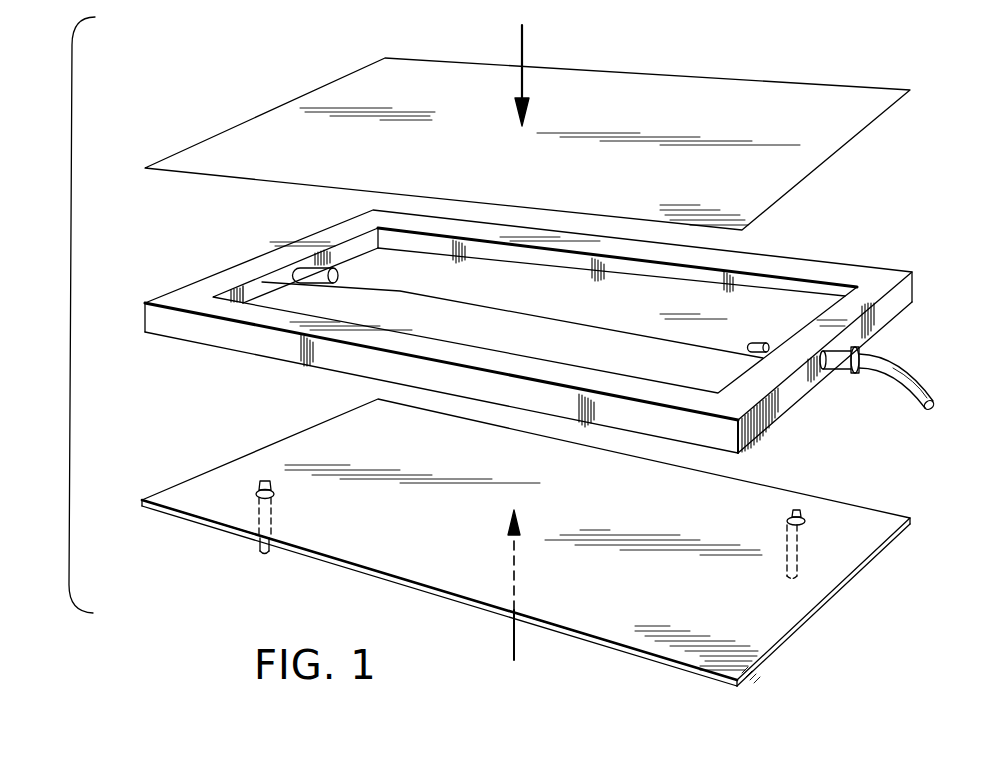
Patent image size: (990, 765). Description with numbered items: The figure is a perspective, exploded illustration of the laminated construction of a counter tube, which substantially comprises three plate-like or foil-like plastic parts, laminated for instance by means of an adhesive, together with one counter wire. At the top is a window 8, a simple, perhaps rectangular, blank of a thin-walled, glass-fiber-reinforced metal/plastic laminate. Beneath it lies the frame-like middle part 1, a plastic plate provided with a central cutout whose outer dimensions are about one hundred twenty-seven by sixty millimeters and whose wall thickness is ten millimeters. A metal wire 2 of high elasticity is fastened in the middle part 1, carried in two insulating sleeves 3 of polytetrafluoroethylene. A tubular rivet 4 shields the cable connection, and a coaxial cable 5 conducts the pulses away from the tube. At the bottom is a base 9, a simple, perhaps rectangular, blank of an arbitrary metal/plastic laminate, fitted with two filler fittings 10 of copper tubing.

The frame-like middle part 1 is at (243, 288).
The metal wire 2 is at (510, 307).
The insulating sleeves 3 is at (320, 282).
The tubular rivet 4 is at (850, 373).
The coaxial cable 5 is at (902, 360).
The window 8 is at (233, 127).
The base 9 is at (180, 484).
The filler fittings 10 is at (260, 553).